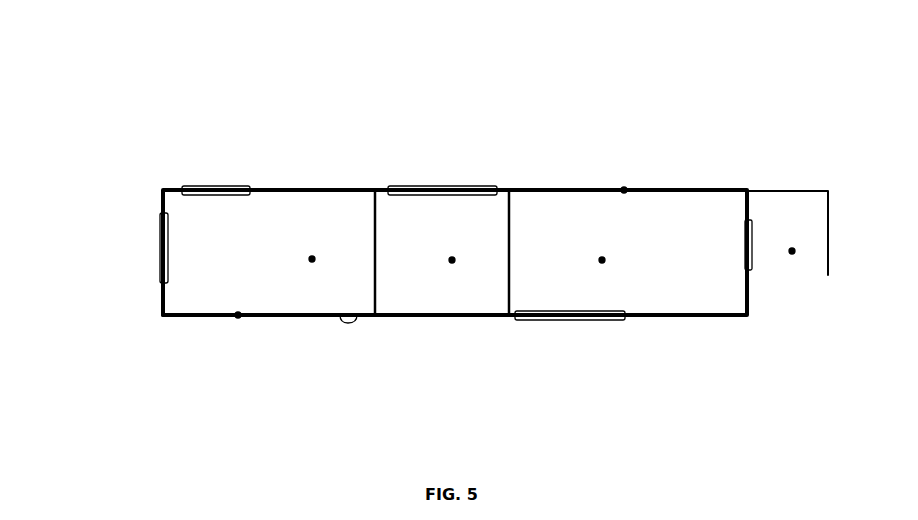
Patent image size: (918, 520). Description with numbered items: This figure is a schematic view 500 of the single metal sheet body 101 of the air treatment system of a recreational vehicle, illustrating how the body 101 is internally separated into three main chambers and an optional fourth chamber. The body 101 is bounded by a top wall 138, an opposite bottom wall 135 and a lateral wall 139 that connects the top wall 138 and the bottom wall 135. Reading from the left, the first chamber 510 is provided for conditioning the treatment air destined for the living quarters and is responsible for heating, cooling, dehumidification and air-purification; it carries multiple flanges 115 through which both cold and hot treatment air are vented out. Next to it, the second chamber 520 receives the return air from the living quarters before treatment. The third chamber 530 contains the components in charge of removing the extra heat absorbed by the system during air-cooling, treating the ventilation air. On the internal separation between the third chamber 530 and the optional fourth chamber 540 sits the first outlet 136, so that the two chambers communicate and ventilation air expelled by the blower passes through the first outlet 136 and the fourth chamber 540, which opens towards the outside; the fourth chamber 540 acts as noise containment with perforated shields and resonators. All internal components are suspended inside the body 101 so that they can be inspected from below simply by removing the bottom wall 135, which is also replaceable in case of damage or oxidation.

The housing assembly 500 is at (157, 137).
The single metal sheet body 101 is at (624, 189).
The flanges 115 is at (202, 186).
The top wall 138 is at (323, 188).
The lateral wall 139 is at (162, 294).
The bottom wall 135 is at (238, 317).
The first outlet 136 is at (751, 242).
The first chamber 510 is at (312, 257).
The second chamber 520 is at (452, 258).
The third chamber 530 is at (602, 258).
The fourth chamber 540 is at (792, 249).